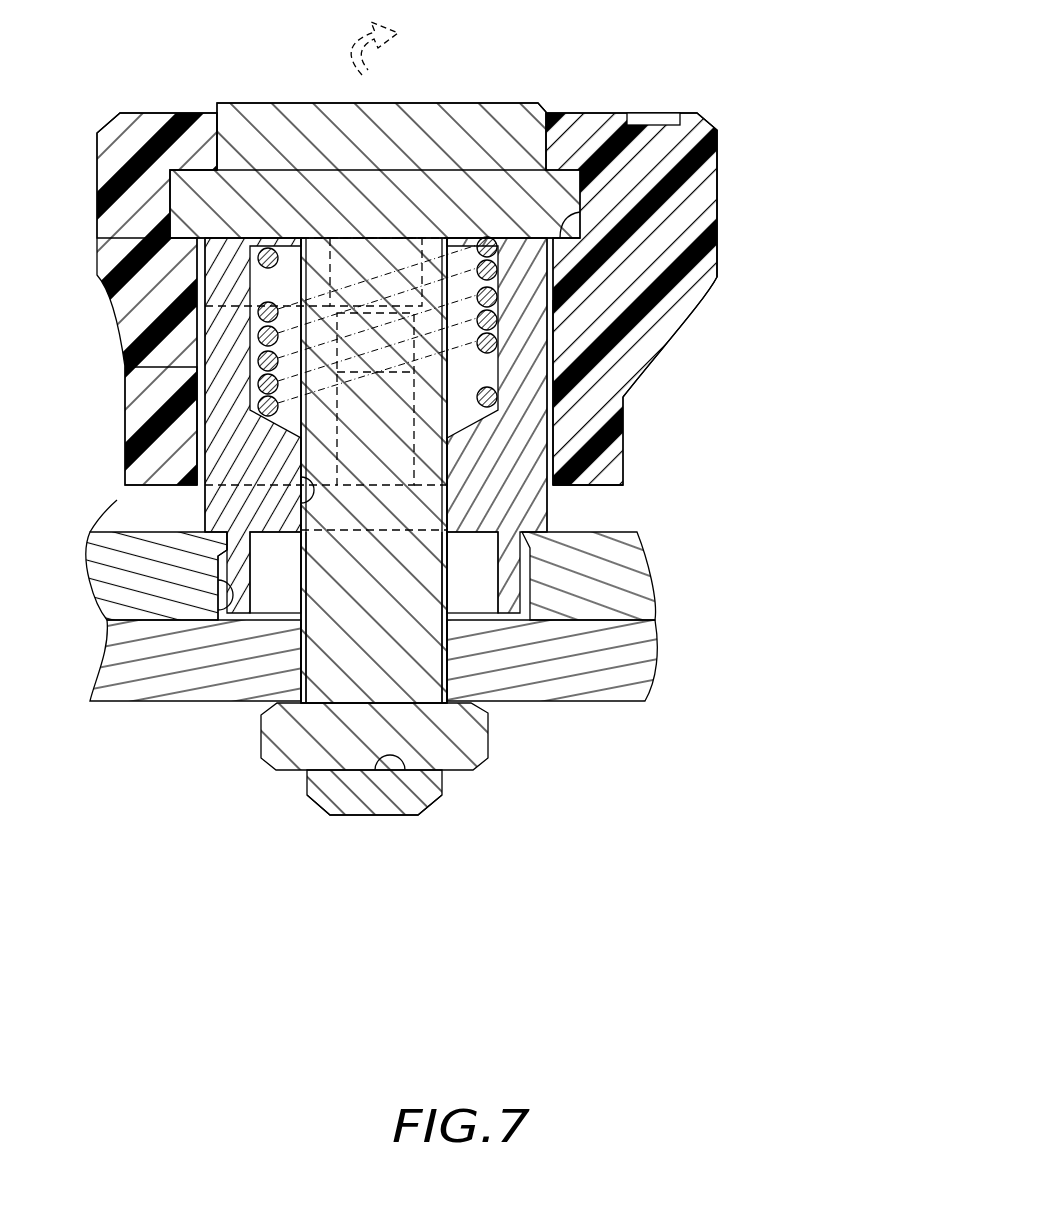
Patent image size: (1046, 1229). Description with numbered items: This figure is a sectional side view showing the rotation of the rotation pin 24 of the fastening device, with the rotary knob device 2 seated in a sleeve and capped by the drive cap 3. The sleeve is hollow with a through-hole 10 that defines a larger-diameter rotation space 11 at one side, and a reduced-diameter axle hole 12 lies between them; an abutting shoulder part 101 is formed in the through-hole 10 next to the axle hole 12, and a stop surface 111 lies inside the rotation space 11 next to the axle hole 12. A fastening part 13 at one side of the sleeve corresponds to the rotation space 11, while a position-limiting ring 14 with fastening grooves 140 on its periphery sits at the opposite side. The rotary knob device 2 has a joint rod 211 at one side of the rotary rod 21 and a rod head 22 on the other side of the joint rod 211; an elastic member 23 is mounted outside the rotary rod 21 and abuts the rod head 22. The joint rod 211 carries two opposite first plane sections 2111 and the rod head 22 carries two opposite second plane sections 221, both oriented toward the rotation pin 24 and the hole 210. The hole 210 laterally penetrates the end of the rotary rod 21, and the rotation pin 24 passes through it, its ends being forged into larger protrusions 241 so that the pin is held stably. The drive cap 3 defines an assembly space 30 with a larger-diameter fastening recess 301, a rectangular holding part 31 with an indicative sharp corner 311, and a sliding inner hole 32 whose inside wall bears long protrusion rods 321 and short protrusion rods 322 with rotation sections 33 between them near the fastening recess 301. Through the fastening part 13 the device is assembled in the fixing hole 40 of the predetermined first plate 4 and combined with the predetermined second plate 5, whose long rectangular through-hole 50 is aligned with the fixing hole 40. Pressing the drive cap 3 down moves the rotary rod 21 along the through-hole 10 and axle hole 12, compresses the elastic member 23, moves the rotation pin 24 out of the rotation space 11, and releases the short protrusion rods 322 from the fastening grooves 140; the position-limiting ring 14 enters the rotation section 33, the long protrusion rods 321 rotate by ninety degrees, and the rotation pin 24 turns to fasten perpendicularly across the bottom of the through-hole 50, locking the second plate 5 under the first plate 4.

The rotary knob device 2 is at (433, 100).
The rod head 22 is at (243, 140).
The second plane sections 221 is at (168, 200).
The elastic member 23 is at (487, 240).
The joint rod 211 is at (432, 290).
The first plane sections 2111 is at (440, 332).
The rotation space 11 is at (465, 588).
The through-hole 10 is at (255, 325).
The abutting shoulder part 101 is at (252, 390).
The fastening grooves 140 is at (183, 280).
The position-limiting ring 14 is at (205, 269).
The rotation sections 33 is at (560, 292).
The drive cap 3 is at (615, 104).
The assembly space 30 is at (805, 192).
The indicative sharp corner 311 is at (700, 118).
The fastening recess 301 is at (562, 222).
The holding part 31 is at (703, 272).
The sliding inner hole 32 is at (548, 440).
The long protrusion rods 321 is at (555, 407).
The short protrusion rods 322 is at (400, 458).
The axle hole 12 is at (302, 468).
The fastening part 13 is at (240, 555).
The predetermined first plate 4 is at (103, 557).
The fixing hole 40 is at (218, 583).
The stop surface 111 is at (617, 590).
The predetermined second plate 5 is at (165, 690).
The through-hole 50 is at (300, 663).
The rotary rod 21 is at (345, 682).
The hole 210 is at (382, 770).
The protrusions 241 is at (463, 768).
The rotation pin 24 is at (468, 880).